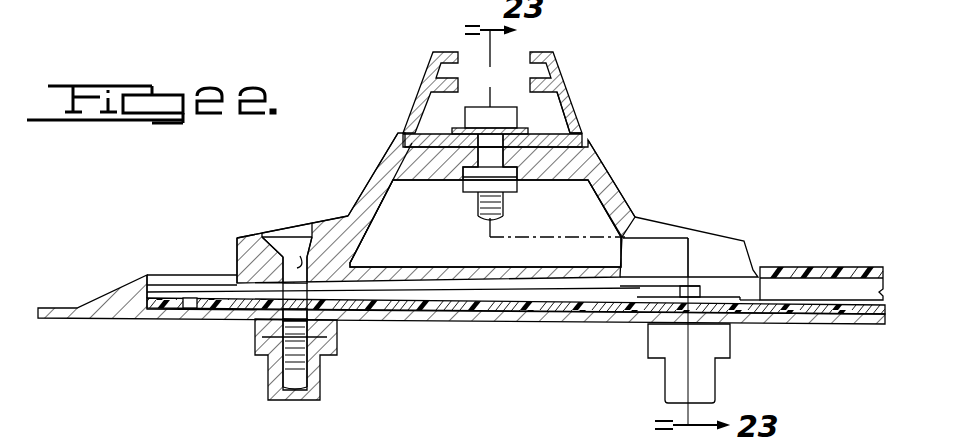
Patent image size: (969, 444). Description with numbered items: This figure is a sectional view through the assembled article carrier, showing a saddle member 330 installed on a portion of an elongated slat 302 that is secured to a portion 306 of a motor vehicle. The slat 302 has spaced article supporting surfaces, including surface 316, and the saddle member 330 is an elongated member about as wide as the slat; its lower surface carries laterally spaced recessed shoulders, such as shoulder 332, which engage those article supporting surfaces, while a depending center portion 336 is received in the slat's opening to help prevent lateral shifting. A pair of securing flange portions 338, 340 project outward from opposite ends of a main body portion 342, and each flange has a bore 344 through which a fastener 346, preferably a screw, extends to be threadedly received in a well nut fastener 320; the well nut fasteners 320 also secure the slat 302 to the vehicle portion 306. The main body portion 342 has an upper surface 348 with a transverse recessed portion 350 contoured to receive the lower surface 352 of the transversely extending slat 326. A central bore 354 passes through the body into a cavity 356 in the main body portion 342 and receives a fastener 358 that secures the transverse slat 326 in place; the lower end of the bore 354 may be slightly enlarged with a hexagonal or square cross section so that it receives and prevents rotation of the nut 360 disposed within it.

The elongated slat 302 is at (807, 268).
The portion of a motor vehicle 306 is at (57, 306).
The article supporting surface 316 is at (190, 272).
The well nut fastener 320 is at (338, 350).
The transversely extending slat 326 is at (500, 145).
The saddle member 330 is at (616, 166).
The recessed shoulder 332 is at (660, 278).
The depending center portion 336 is at (628, 298).
The securing flange portion 338 is at (248, 237).
The securing flange portion 340 is at (728, 238).
The main body portion 342 is at (378, 162).
The bore 344 is at (314, 240).
The fastener 346 is at (283, 243).
The upper surface 348 is at (587, 140).
The transverse recessed portion 350 is at (548, 145).
The lower surface 352 is at (553, 90).
The central bore 354 is at (490, 139).
The cavity 356 is at (452, 241).
The fastener 358 is at (480, 145).
The nut 360 is at (515, 192).